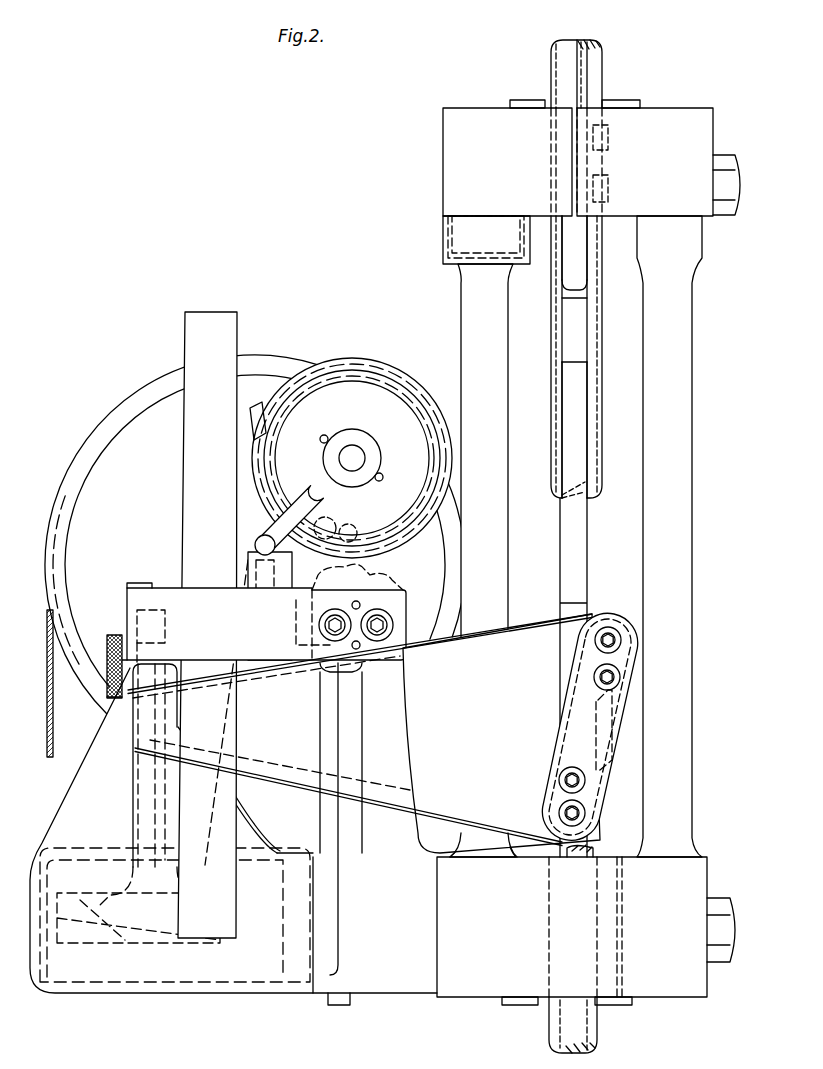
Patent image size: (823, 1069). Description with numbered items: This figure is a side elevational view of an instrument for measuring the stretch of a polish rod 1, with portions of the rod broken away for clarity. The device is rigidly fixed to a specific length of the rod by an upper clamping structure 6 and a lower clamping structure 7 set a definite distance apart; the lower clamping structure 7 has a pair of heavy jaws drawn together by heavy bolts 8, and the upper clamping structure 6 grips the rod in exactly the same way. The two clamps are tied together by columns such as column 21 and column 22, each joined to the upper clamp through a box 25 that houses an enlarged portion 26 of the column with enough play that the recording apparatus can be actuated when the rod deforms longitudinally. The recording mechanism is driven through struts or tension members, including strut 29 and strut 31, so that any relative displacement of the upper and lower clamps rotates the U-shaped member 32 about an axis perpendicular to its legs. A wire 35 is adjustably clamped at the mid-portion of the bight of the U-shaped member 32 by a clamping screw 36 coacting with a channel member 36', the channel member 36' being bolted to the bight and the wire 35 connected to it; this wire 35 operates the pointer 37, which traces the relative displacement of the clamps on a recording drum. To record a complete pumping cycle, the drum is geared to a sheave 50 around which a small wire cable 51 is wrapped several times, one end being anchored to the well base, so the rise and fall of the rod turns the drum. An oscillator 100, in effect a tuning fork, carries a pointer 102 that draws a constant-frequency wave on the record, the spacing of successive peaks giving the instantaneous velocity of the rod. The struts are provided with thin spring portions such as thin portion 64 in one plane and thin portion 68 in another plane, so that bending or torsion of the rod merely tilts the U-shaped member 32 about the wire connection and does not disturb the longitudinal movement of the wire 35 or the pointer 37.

The polish rod 1 is at (556, 61).
The upper clamping structure 6 is at (443, 148).
The lower clamping structure 7 is at (487, 985).
The bolts 8 is at (728, 898).
The column 21 is at (512, 424).
The column 22 is at (690, 363).
The box 25 is at (447, 256).
The enlarged portion 26 is at (455, 241).
The strut 29 is at (585, 440).
The strut 31 is at (613, 813).
The U-shaped member 32 is at (522, 640).
The wire 35 is at (150, 782).
The clamping screw 36 is at (95, 681).
The channel member 36' is at (266, 613).
The pointer 37 is at (246, 545).
The sheave 50 is at (95, 487).
The wire cable 51 is at (47, 705).
The thin portion or spring 64 is at (583, 340).
The thin portion or spring 68 is at (583, 258).
The oscillator 100 is at (196, 340).
The pointer 102 is at (250, 502).